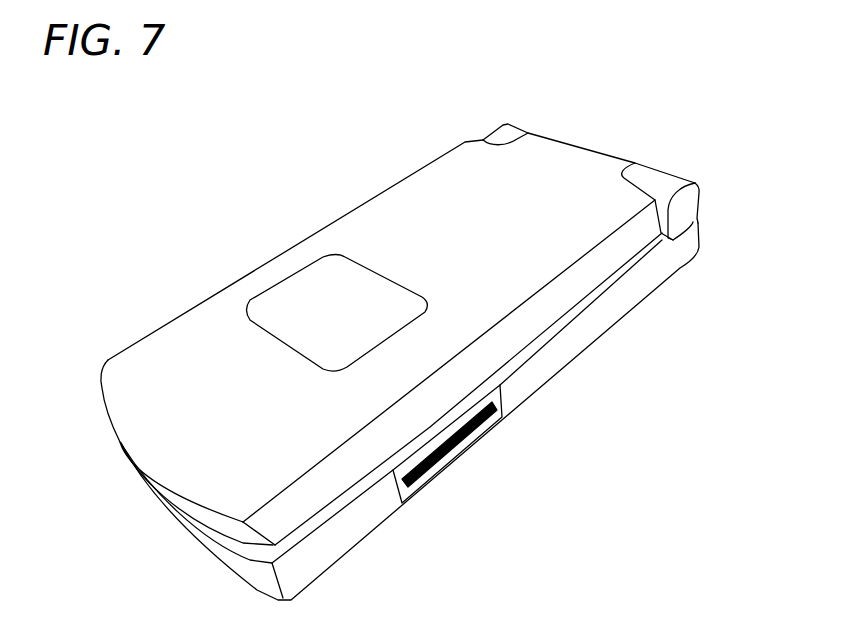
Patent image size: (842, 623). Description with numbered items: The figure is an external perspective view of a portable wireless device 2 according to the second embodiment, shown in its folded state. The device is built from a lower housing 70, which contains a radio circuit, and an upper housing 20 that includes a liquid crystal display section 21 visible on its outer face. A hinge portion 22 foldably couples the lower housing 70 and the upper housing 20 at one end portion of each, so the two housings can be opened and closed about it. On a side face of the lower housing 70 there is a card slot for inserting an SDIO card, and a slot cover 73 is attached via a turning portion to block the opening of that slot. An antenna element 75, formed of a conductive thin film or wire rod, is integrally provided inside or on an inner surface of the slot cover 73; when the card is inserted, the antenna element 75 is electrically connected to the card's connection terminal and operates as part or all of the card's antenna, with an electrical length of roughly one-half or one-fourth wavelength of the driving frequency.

The portable wireless device 2 is at (160, 126).
The upper housing 20 is at (345, 213).
The liquid crystal display section 21 is at (280, 283).
The hinge portion 22 is at (698, 203).
The lower housing 70 is at (588, 345).
The slot cover 73 is at (427, 485).
The antenna element 75 is at (472, 438).